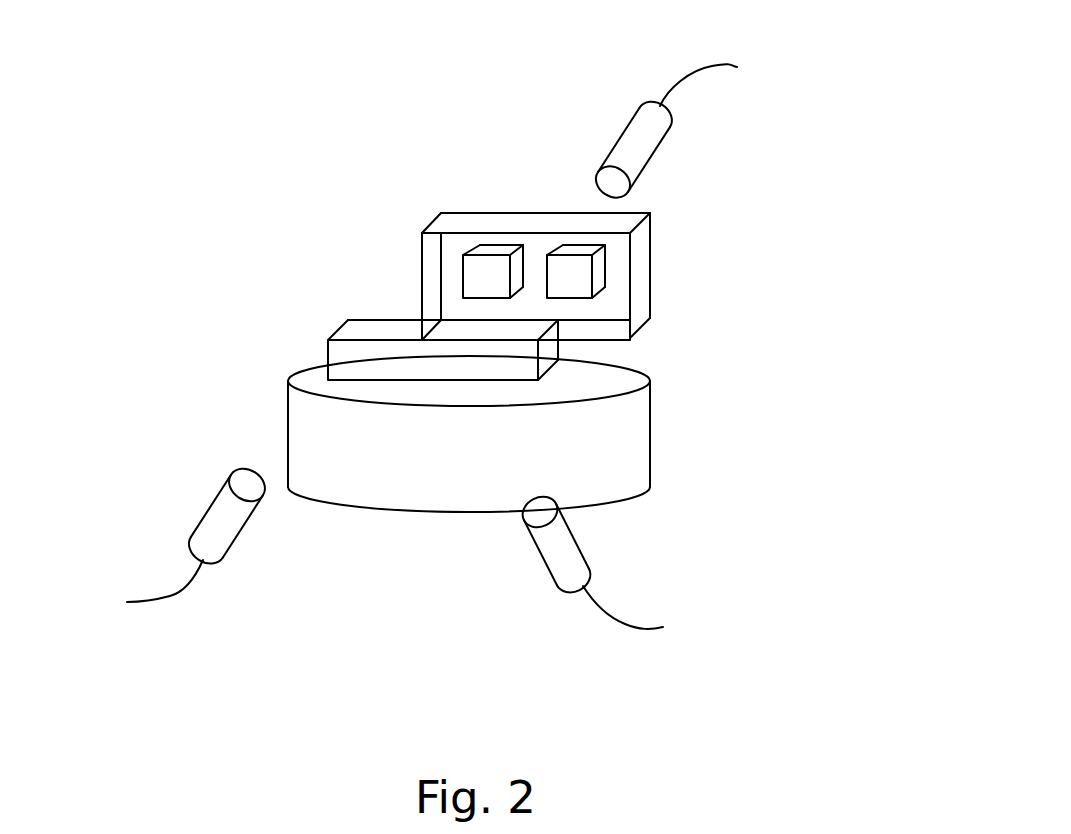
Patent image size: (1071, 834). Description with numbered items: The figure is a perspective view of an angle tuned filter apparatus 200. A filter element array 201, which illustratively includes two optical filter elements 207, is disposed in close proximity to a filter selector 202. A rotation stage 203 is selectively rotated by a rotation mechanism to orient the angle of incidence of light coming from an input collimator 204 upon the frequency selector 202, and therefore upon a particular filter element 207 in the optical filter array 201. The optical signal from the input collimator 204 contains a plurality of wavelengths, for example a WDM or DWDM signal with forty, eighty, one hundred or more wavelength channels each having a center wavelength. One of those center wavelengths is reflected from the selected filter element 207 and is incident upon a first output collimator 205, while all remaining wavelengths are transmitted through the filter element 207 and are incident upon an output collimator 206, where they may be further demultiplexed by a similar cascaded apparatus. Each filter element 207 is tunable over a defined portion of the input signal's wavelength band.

The angle tuned filter apparatus 200 is at (932, 53).
The filter element array 201 is at (650, 252).
The filter selector 202 is at (640, 357).
The rotation stage 203 is at (653, 443).
The input collimator 204 is at (163, 592).
The first output collimator 205 is at (533, 552).
The output collimator 206 is at (627, 104).
The filter element 207 is at (569, 235).